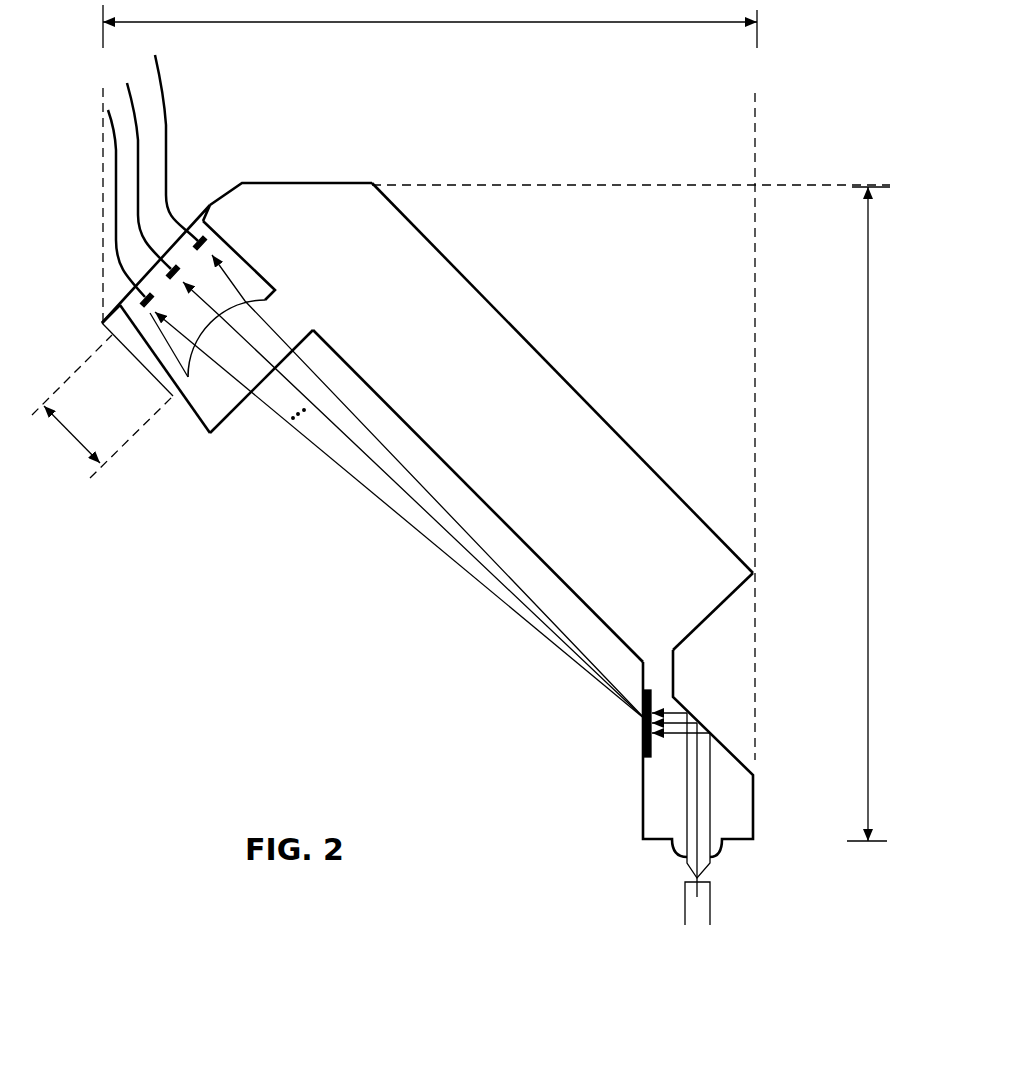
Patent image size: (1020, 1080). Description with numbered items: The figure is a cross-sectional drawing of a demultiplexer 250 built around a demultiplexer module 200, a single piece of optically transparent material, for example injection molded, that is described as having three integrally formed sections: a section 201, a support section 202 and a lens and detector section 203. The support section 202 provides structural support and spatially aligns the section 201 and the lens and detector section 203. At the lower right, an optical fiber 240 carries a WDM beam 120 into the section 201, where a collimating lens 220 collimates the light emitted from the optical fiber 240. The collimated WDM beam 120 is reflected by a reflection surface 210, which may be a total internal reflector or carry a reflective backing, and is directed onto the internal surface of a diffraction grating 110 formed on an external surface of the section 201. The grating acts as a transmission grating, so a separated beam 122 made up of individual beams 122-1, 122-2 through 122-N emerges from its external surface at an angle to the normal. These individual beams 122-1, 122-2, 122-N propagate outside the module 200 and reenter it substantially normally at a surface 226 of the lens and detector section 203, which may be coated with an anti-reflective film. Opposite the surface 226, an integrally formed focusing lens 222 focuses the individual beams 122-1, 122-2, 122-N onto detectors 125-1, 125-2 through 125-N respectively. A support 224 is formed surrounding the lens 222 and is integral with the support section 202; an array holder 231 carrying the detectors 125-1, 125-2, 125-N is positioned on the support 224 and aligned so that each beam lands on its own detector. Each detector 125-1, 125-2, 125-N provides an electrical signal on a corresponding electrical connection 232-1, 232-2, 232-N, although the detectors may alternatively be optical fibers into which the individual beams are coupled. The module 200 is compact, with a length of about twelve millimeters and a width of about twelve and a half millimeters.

The demultiplexer 250 is at (457, 467).
The demultiplexer module 200 is at (481, 422).
The support section 202 is at (515, 322).
The surface 226 is at (222, 433).
The lens and detector section 203 is at (175, 415).
The array holder 231 is at (198, 213).
The support 224 is at (247, 262).
The focusing lens 222 is at (263, 296).
The electrical connection 232-1 is at (167, 147).
The electrical connection 232-2 is at (138, 132).
The electrical connection 232-N is at (115, 135).
The detector 125-1 is at (190, 233).
The detector 125-2 is at (162, 258).
The detector 125-N is at (136, 291).
The separated beam 122 is at (400, 487).
The individual beam 122-1 is at (428, 487).
The individual beam 122-2 is at (402, 487).
The individual beam 122-N is at (377, 497).
The reflection surface 210 is at (724, 742).
The section 201 is at (641, 776).
The diffraction grating 110 is at (641, 743).
The WDM beam 120 is at (687, 800).
The collimating lens 220 is at (720, 852).
The optical fiber 240 is at (683, 892).